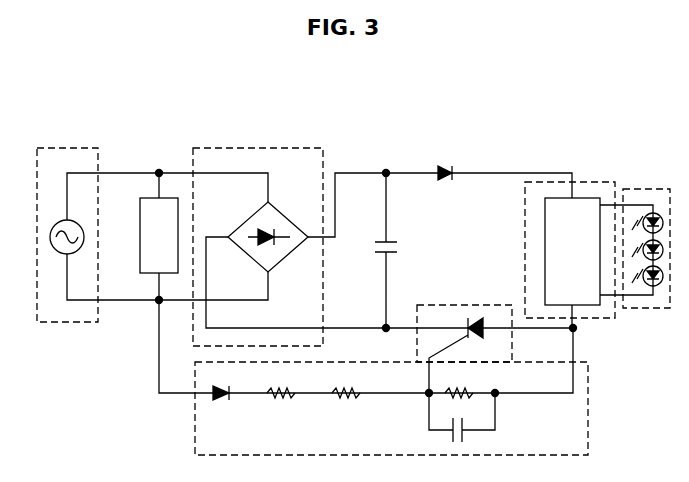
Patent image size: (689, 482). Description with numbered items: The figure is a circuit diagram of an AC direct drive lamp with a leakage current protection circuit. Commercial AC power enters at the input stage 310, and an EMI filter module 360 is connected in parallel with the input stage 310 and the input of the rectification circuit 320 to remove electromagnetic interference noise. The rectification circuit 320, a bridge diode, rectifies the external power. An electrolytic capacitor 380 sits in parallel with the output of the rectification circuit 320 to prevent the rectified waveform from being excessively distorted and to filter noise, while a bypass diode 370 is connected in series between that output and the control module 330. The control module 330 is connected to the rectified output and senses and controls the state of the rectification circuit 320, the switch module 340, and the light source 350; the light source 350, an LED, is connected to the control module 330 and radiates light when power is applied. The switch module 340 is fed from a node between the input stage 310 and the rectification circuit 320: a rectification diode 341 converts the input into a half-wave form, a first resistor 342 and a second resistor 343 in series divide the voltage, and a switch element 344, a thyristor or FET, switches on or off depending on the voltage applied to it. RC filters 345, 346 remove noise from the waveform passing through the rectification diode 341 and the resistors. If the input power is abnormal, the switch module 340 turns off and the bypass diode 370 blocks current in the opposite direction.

The input stage 310 is at (58, 148).
The rectification circuit 320 is at (248, 148).
The control module 330 is at (598, 182).
The switch module 340 is at (590, 411).
The rectification diode 341 is at (219, 401).
The first resistor 342 is at (281, 399).
The second resistor 343 is at (345, 399).
The switch element 344 is at (476, 340).
The RC filter resistor 345 is at (466, 397).
The RC filter capacitor 346 is at (463, 436).
The light source 350 is at (646, 189).
The EMI filter module 360 is at (147, 198).
The bypass diode 370 is at (445, 163).
The electrolytic capacitor 380 is at (397, 243).